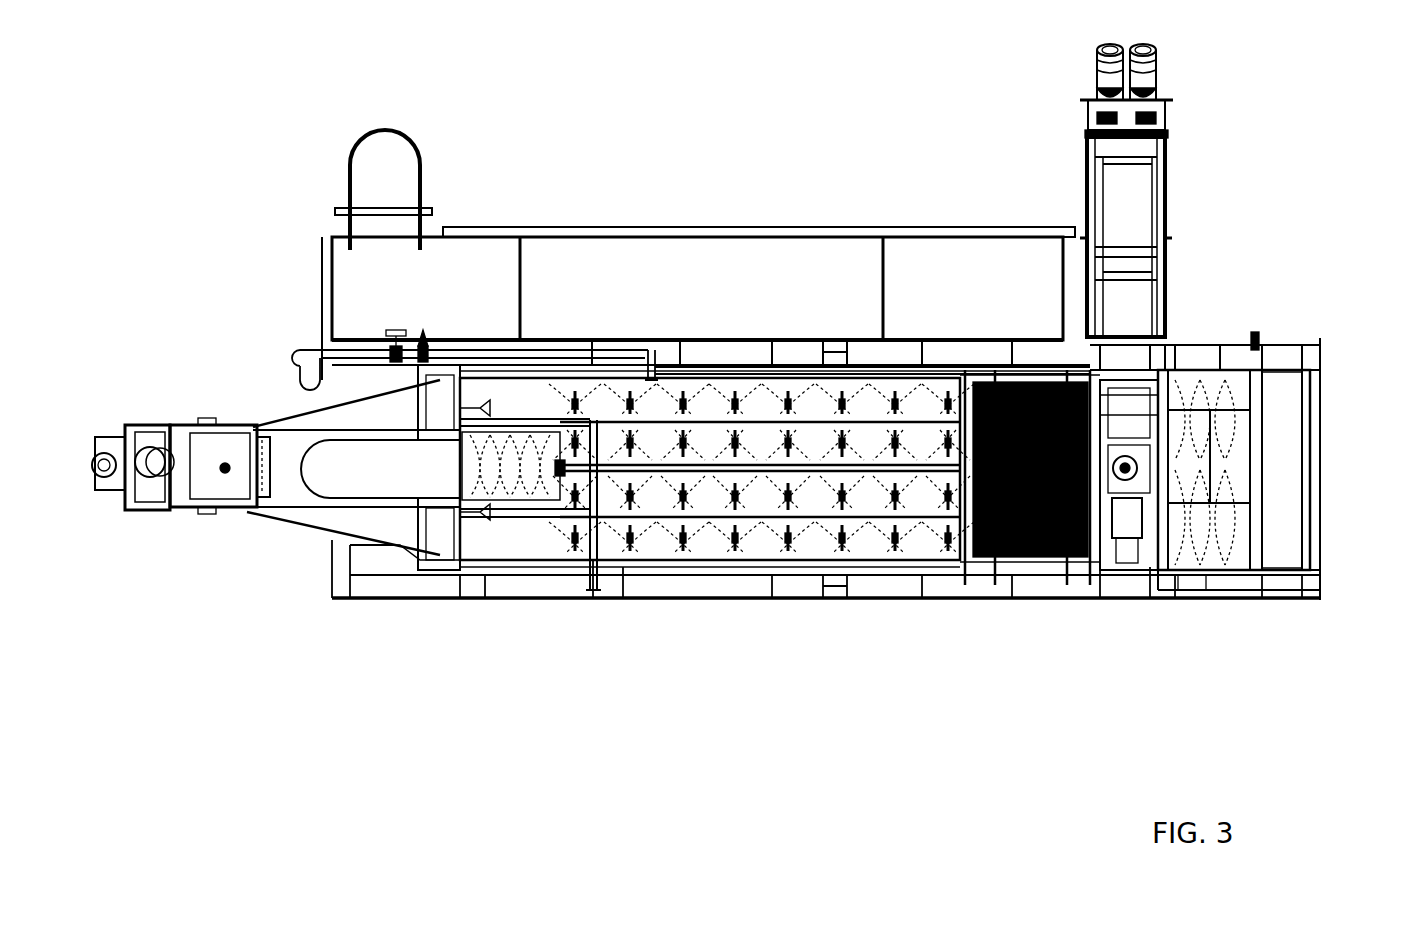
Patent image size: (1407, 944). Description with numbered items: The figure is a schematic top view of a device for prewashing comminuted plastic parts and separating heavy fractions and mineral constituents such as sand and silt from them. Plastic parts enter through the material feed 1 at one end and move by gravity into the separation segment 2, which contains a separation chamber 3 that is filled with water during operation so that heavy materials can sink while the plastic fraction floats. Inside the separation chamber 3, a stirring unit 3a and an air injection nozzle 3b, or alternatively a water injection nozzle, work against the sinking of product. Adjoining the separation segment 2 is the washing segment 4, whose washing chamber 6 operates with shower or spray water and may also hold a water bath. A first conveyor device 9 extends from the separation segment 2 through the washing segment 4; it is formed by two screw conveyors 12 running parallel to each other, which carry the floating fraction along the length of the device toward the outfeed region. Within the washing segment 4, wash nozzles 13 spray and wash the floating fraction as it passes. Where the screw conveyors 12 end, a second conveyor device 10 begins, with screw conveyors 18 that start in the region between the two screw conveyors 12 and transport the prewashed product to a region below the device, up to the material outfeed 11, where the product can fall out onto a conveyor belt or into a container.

The material feed 1 is at (1276, 487).
The separation segment 2 is at (1245, 474).
The separation chamber 3 is at (1207, 480).
The stirring unit 3a is at (1124, 549).
The air injection nozzle 3b is at (1125, 510).
The washing segment 4 is at (826, 563).
The washing chamber 6 is at (716, 615).
The first conveyor device 9 is at (1245, 474).
The second conveyor device 10 is at (432, 564).
The material outfeed 11 is at (157, 547).
The screw conveyor 12 is at (1245, 474).
The wash nozzles 13 is at (738, 403).
The screw conveyors 18 is at (440, 466).